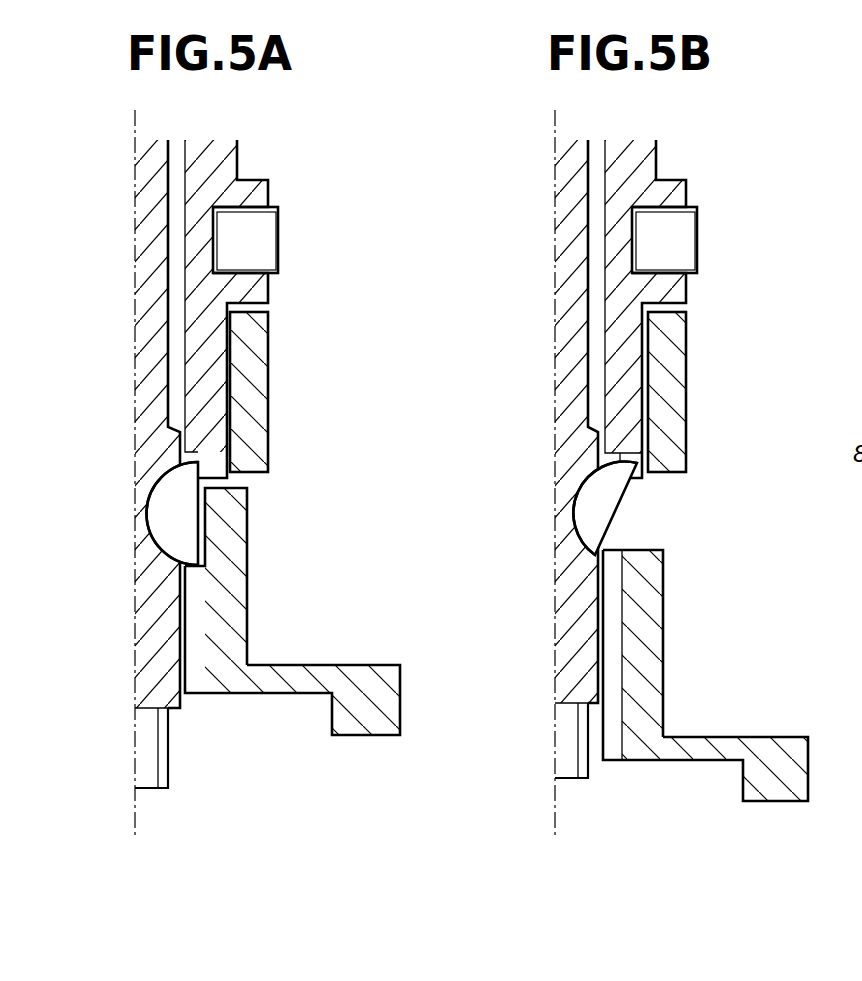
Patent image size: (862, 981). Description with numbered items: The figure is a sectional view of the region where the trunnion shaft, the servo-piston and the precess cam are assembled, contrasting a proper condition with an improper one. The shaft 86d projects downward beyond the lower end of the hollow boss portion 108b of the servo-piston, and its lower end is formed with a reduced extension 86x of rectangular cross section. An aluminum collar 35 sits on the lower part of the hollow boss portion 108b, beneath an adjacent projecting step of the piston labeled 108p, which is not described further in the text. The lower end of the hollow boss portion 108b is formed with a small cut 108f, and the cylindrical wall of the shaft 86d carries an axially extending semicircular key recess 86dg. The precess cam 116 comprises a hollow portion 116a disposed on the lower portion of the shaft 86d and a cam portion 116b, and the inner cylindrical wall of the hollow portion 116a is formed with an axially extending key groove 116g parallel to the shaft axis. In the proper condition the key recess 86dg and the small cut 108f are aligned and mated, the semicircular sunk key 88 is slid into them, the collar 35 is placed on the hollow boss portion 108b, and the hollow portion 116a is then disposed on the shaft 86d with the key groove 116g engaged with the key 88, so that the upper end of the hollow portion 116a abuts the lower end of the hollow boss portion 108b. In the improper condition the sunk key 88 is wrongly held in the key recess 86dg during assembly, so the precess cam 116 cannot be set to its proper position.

In FIG. 5A, the aluminum collar 35 is at (260, 362).
In FIG. 5B, the aluminum collar 35 is at (677, 362).
In FIG. 5A, the shaft 86d is at (150, 388).
In FIG. 5B, the shaft 86d is at (573, 392).
In FIG. 5A, the semicircular key recess 86dg is at (168, 530).
In FIG. 5B, the semicircular key recess 86dg is at (584, 522).
In FIG. 5A, the reduced extension 86x is at (170, 757).
In FIG. 5B, the reduced extension 86x is at (585, 760).
In FIG. 5A, the sunk key 88 is at (182, 517).
In FIG. 5B, the sunk key 88 is at (605, 500).
In FIG. 5A, the hollow boss portion 108b is at (240, 176).
In FIG. 5B, the hollow boss portion 108b is at (660, 176).
In FIG. 5A, the projection of member 108 108p is at (262, 293).
In FIG. 5B, the projection of member 108 108p is at (682, 293).
In FIG. 5A, the small cut 108f is at (232, 478).
In FIG. 5B, the small cut 108f is at (643, 478).
In FIG. 5A, the precess cam 116 is at (339, 641).
In FIG. 5B, the precess cam 116 is at (732, 678).
In FIG. 5A, the hollow portion 116a is at (233, 583).
In FIG. 5B, the hollow portion 116a is at (642, 615).
In FIG. 5A, the cam portion 116b is at (385, 700).
In FIG. 5B, the cam portion 116b is at (777, 743).
In FIG. 5A, the key groove 116g is at (197, 657).
In FIG. 5B, the key groove 116g is at (645, 678).